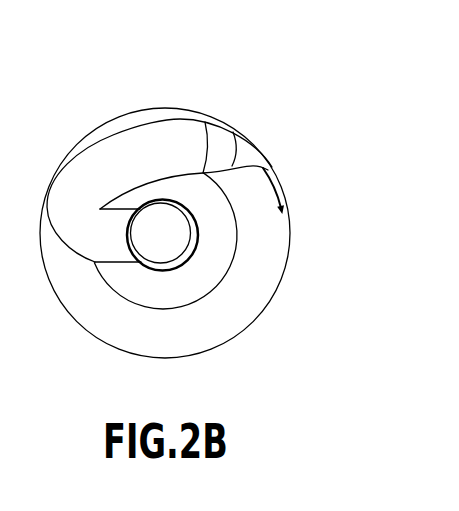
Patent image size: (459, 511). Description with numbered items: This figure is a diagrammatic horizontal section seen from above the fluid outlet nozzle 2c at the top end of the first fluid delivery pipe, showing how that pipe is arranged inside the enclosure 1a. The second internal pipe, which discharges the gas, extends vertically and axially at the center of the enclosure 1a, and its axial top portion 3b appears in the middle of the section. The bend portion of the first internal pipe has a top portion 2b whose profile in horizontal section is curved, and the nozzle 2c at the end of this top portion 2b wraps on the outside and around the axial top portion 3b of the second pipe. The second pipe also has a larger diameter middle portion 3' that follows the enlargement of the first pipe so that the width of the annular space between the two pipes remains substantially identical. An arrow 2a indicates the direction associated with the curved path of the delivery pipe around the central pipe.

The enclosure 1a is at (83, 328).
The rotor rotation direction 2a is at (263, 172).
The top portion of the first internal pipe 2b is at (125, 153).
The fluid outlet nozzle 2c is at (257, 132).
The axial top portion of the second pipe 3b is at (191, 211).
The larger diameter middle portion of the second pipe 3' is at (181, 254).